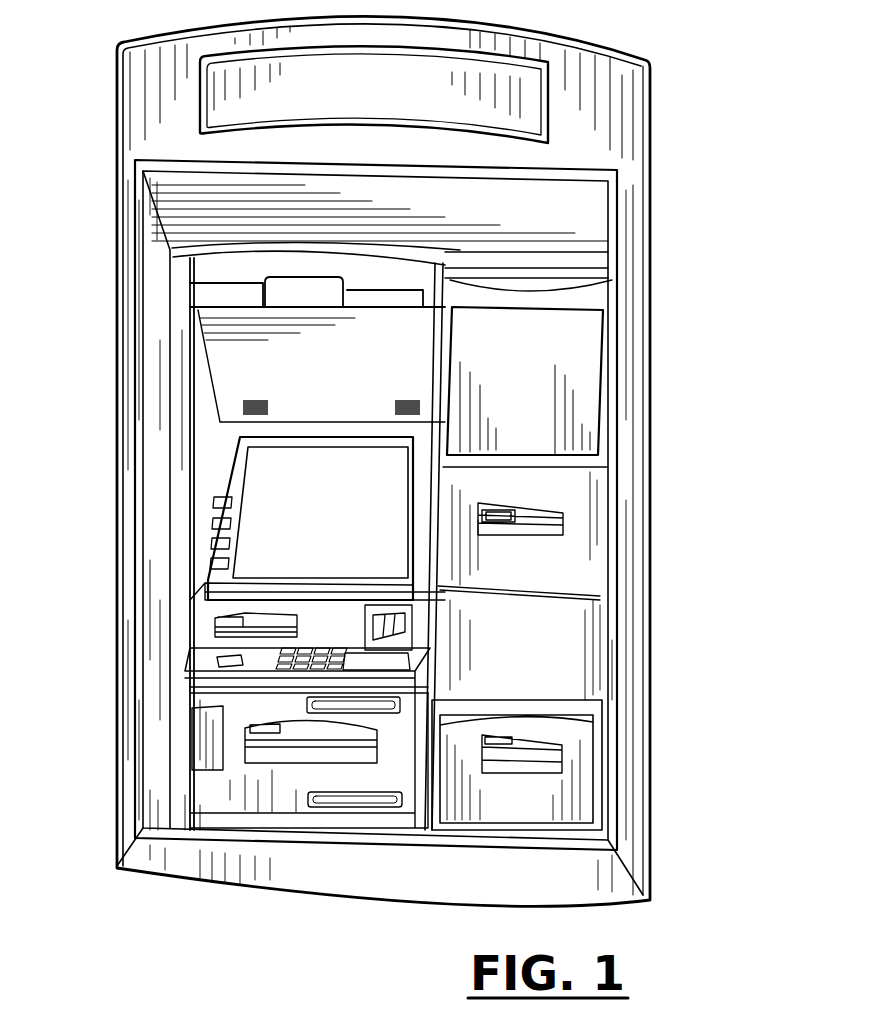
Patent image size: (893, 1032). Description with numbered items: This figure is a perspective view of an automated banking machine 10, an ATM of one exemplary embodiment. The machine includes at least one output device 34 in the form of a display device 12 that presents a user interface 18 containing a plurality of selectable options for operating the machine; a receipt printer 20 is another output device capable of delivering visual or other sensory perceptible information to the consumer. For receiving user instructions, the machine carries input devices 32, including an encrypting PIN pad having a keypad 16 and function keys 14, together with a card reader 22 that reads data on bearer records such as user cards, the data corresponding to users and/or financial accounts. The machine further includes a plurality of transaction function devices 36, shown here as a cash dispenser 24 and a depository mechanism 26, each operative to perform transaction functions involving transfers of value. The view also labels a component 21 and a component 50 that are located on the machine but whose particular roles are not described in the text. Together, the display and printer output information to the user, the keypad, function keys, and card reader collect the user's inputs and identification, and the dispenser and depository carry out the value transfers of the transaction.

The automated banking machine 10 is at (667, 180).
The display device 12 is at (247, 492).
The function keys 14 is at (212, 578).
The keypad 16 is at (290, 652).
The user interface 18 is at (245, 544).
The receipt printer 20 is at (218, 620).
The card reader slot 21 is at (563, 517).
The card reader 22 is at (415, 640).
The cash dispenser 24 is at (263, 747).
The depository mechanism 26 is at (545, 760).
The input devices 32 is at (202, 527).
The output device 34 is at (228, 447).
The transaction function devices 36 is at (480, 783).
The panel 50 is at (590, 326).